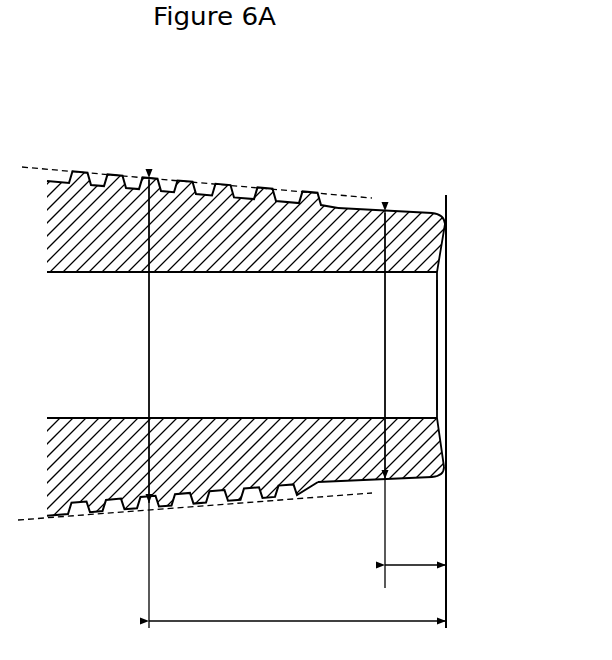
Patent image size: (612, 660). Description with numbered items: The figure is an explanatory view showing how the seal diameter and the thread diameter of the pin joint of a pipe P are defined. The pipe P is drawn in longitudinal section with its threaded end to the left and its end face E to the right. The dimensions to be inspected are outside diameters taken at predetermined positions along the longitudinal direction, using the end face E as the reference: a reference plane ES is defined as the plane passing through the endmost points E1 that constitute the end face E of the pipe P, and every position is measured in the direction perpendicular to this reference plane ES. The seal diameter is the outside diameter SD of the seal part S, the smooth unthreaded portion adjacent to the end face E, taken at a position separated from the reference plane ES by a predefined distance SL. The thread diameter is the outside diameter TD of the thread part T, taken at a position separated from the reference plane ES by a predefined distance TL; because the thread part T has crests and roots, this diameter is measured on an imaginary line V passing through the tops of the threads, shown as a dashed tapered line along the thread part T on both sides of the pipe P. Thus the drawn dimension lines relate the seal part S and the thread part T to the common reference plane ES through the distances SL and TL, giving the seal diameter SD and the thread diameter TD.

The pipe P is at (332, 150).
The thread part T is at (206, 167).
The imaginary line V is at (125, 175).
The seal part S is at (403, 197).
The end face E is at (440, 307).
The endmost points E1 is at (456, 344).
The reference plane ES is at (442, 377).
The outside diameter of thread part (thread diameter) TD is at (132, 403).
The outside diameter of seal part (seal diameter) SD is at (371, 399).
The predefined distance SL is at (415, 549).
The predefined distance TL is at (297, 411).